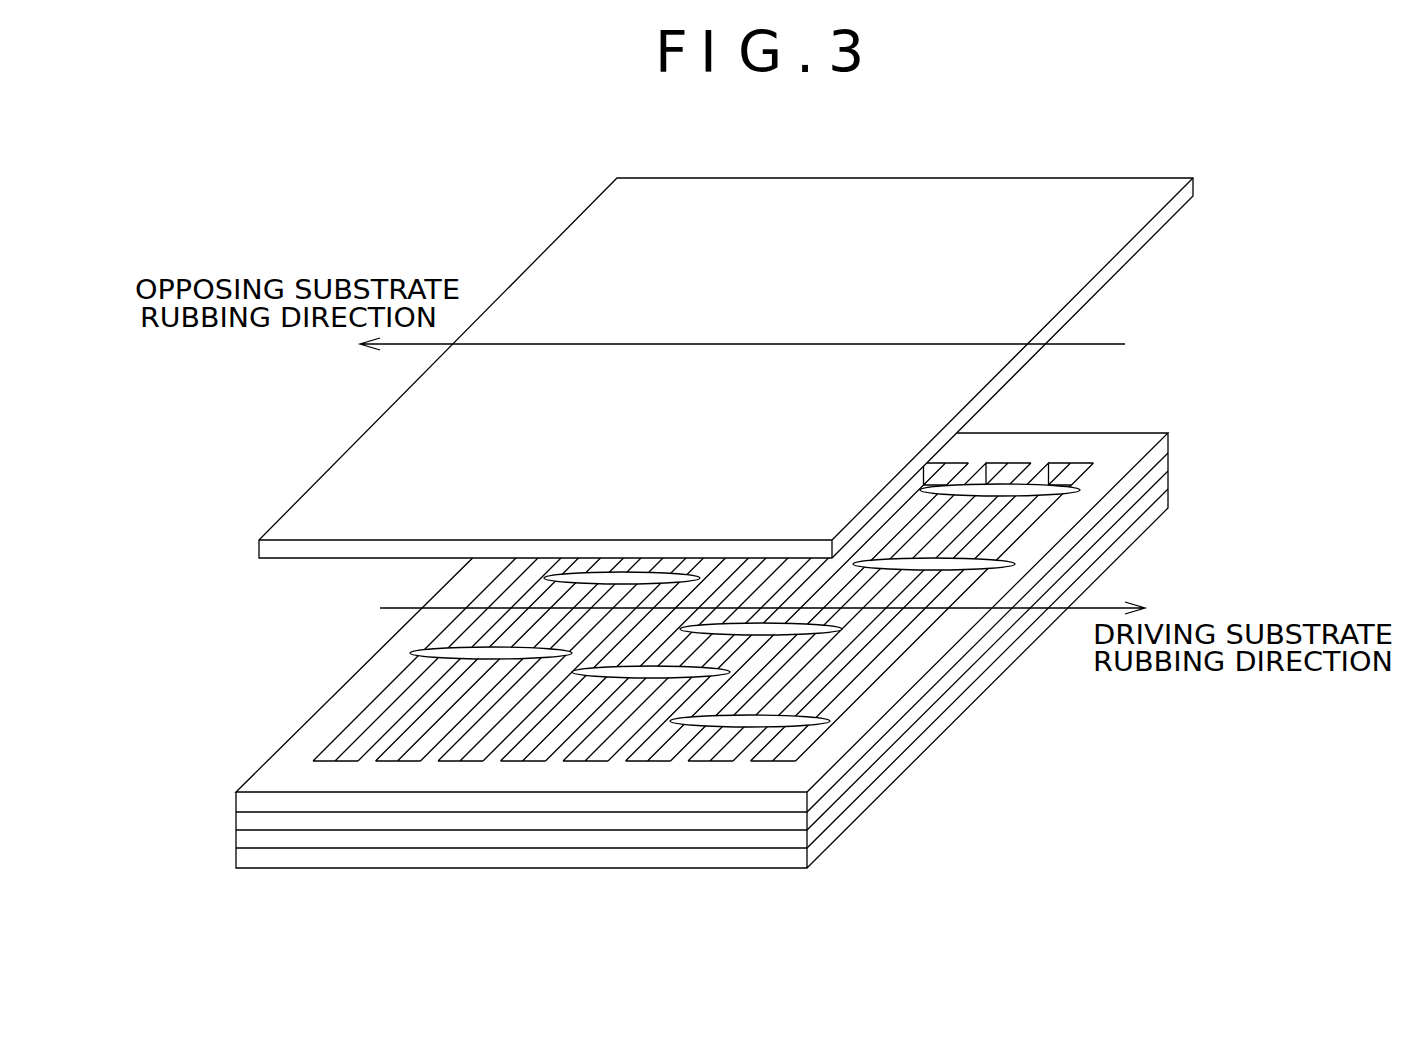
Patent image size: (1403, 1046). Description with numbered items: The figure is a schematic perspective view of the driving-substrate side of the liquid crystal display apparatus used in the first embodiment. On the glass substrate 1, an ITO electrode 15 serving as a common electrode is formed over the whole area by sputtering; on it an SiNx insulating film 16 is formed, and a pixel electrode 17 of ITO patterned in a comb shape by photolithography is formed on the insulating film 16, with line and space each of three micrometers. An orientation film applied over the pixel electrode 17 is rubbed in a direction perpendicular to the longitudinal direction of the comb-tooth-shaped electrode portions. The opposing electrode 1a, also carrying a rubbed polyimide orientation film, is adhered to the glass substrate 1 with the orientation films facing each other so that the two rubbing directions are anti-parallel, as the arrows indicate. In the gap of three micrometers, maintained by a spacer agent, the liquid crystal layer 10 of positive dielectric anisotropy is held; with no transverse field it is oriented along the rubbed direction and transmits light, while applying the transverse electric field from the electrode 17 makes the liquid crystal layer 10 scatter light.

The glass substrate 1 is at (1165, 508).
The opposing electrode 1a is at (1187, 192).
The liquid crystal layer 10 is at (1057, 492).
The ITO electrode 15 is at (1165, 486).
The insulating film 16 is at (1165, 467).
The pixel electrode 17 is at (1165, 446).